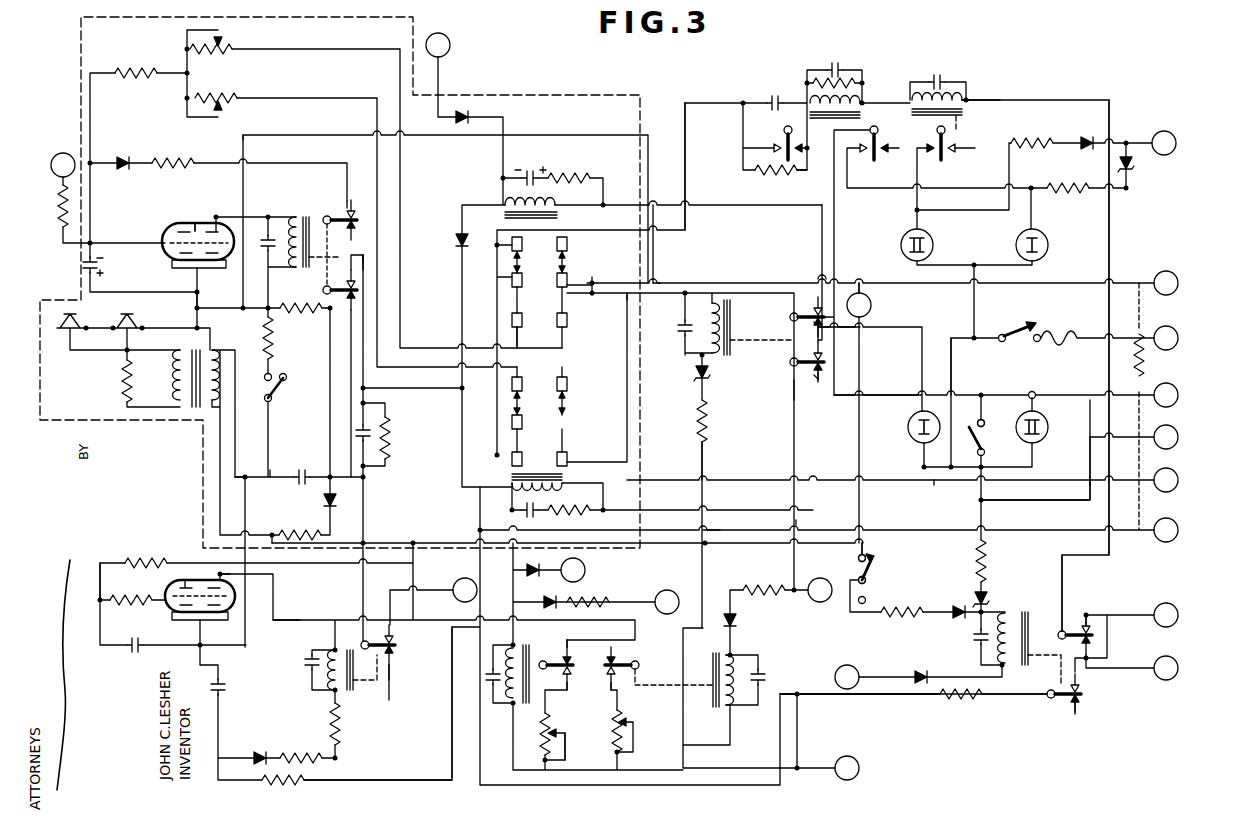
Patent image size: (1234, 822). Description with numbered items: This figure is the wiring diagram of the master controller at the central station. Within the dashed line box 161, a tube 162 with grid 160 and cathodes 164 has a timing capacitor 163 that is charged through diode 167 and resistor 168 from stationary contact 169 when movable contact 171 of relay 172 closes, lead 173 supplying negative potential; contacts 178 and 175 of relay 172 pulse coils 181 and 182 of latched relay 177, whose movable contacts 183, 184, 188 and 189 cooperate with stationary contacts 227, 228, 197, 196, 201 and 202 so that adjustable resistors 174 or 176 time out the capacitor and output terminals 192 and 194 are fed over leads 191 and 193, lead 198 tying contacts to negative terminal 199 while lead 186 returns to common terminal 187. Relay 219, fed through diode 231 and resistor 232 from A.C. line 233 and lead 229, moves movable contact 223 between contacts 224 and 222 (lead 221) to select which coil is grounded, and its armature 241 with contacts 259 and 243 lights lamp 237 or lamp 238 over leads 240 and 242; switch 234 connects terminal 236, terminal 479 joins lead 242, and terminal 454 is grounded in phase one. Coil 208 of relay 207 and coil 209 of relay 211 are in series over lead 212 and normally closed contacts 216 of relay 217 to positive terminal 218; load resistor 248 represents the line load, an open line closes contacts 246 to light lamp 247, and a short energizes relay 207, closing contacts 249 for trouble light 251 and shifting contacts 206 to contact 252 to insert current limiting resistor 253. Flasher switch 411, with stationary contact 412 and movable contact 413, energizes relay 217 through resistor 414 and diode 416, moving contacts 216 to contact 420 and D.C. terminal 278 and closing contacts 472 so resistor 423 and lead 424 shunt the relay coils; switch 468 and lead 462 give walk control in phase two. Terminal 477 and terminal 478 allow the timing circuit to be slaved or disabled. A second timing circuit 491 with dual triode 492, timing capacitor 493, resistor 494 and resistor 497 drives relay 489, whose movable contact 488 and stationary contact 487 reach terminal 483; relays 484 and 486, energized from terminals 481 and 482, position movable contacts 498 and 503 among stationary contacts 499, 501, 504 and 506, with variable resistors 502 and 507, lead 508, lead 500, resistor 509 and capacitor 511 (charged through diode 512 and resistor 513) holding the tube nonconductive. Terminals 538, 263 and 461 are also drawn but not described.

The terminal 477 is at (450, 42).
The terminal 478 is at (60, 153).
The adjustable resistor 174 is at (228, 56).
The adjustable resistor 176 is at (236, 104).
The diode 167 is at (122, 172).
The resistor 168 is at (172, 170).
The grid 160 is at (165, 226).
The tube 162 is at (195, 223).
The relay 172 is at (302, 234).
The movable contact 171 is at (338, 208).
The stationary contact 169 is at (356, 206).
The stationary contact 175 is at (360, 276).
The movable contact 178 is at (358, 292).
The capacitor 163 is at (106, 270).
The cathodes 164 is at (210, 285).
The lead 186 is at (728, 752).
The lead 173 is at (312, 300).
The latched relay 177 is at (557, 169).
The coil 181 is at (562, 208).
The stationary contact 202 is at (524, 247).
The movable contact 183 is at (569, 278).
The movable contact 188 is at (512, 280).
The stationary contact 197 is at (512, 320).
The stationary contact 227 is at (562, 313).
The lead 198 is at (718, 480).
The stationary contact 196 is at (512, 384).
The movable contact 184 is at (562, 392).
The movable contact 189 is at (512, 422).
The stationary contact 201 is at (522, 455).
The stationary contact 228 is at (567, 455).
The coil 182 is at (566, 478).
The coil 209 is at (984, 108).
The lead 221 is at (854, 324).
The dashed line box 161 is at (654, 267).
The stationary contact 252 is at (760, 140).
The current limiting resistor 253 is at (772, 176).
The contacts 206 is at (800, 152).
The relay 207 is at (826, 135).
The coil 208 is at (862, 108).
The relay 211 is at (960, 126).
The lead 212 is at (1104, 462).
The contacts 249 is at (868, 158).
The contacts 246 is at (938, 160).
The lamp 247 is at (900, 235).
The trouble light 251 is at (1049, 240).
The stationary contact 243 is at (820, 279).
The lead 191 is at (886, 276).
The terminal 454 is at (871, 300).
The first output terminal 192 is at (1175, 274).
The relay 219 is at (714, 322).
The movable contact 241 is at (790, 312).
The stationary contact 259 is at (800, 326).
The stationary contact 222 is at (800, 352).
The movable contact 223 is at (642, 742).
The stationary contact 224 is at (808, 396).
The lead 229 is at (690, 392).
The diode 231 is at (710, 370).
The resistor 232 is at (708, 418).
The lead 240 is at (912, 328).
The switch 234 is at (1012, 322).
The terminal 236 is at (1176, 330).
The load resistor 248 is at (1134, 378).
The terminal 479 is at (1176, 386).
The lead 242 is at (880, 392).
The lamp 237 is at (908, 432).
The manually controlled switch 468 is at (982, 426).
The lamp 238 is at (1060, 416).
The A.C. line 233 is at (968, 447).
The lead 462 is at (1014, 510).
The terminal 461 is at (1176, 430).
The terminal 199 is at (1176, 472).
The second output terminal 194 is at (1176, 520).
The movable contact 413 is at (868, 578).
The lead 193 is at (720, 530).
The stationary contact 412 is at (850, 556).
The switch 411 is at (855, 568).
The terminal 481 is at (830, 568).
The resistor 497 is at (166, 545).
The dual triode 492 is at (168, 576).
The resistor 494 is at (118, 608).
The timing capacitor 493 is at (140, 638).
The timing circuit 491 is at (200, 610).
The capacitor 511 is at (234, 682).
The diode 512 is at (262, 748).
The resistor 513 is at (292, 748).
The resistor 509 is at (300, 772).
The lead 508 is at (382, 780).
The stationary contact 487 is at (382, 610).
The movable contact 488 is at (392, 672).
The relay 489 is at (338, 697).
The lead 500 is at (626, 602).
The terminal 483 is at (458, 580).
The terminal 538 is at (586, 566).
The terminal 482 is at (675, 592).
The relay 486 is at (513, 663).
The stationary contact 499 is at (572, 650).
The stationary contact 506 is at (576, 666).
The movable contact 503 is at (572, 682).
The stationary contact 504 is at (562, 710).
The variable resistor 507 is at (552, 725).
The movable contact 498 is at (640, 660).
The stationary contact 501 is at (616, 684).
The variable resistor 502 is at (622, 718).
The relay 484 is at (726, 670).
The resistor 414 is at (890, 620).
The diode 416 is at (956, 622).
The relay 217 is at (1016, 633).
The stationary contact 420 is at (1082, 610).
The normally closed contacts 216 is at (1094, 635).
The D.C. voltage terminal 278 is at (1176, 606).
The terminal 218 is at (1184, 652).
The terminal 263 is at (858, 658).
The contacts 472 is at (1082, 686).
The lead 424 is at (460, 745).
The resistor 423 is at (968, 712).
The terminal 187 is at (856, 758).